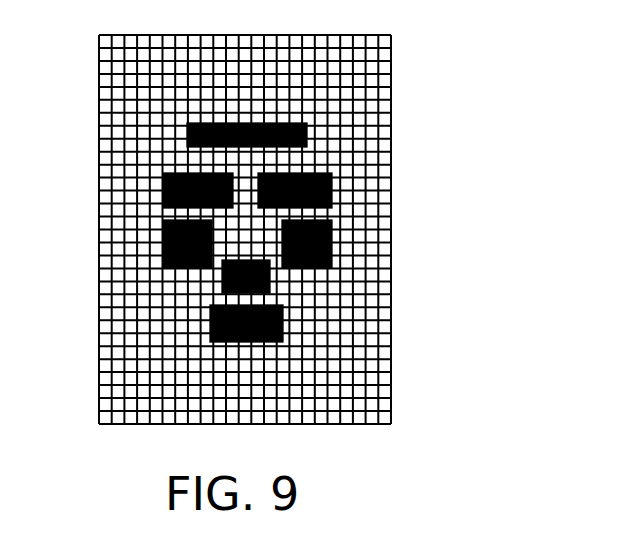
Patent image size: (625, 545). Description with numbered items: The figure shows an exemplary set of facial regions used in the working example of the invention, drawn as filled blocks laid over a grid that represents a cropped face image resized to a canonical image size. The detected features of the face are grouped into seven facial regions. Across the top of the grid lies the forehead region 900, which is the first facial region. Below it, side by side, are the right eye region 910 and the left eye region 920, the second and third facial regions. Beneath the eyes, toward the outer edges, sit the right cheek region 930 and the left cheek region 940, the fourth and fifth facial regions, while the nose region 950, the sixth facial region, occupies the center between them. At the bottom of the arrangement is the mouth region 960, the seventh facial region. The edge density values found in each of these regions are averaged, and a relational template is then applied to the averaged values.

The forehead region 900 is at (393, 108).
The right eye region 910 is at (163, 185).
The left eye region 920 is at (332, 183).
The right cheek region 930 is at (163, 238).
The left cheek region 940 is at (332, 253).
The nose region 950 is at (222, 291).
The mouth region 960 is at (290, 338).